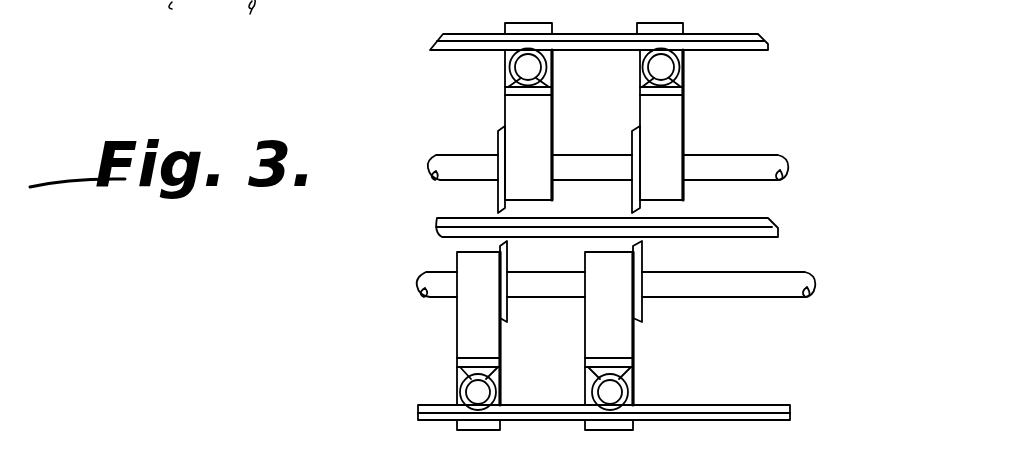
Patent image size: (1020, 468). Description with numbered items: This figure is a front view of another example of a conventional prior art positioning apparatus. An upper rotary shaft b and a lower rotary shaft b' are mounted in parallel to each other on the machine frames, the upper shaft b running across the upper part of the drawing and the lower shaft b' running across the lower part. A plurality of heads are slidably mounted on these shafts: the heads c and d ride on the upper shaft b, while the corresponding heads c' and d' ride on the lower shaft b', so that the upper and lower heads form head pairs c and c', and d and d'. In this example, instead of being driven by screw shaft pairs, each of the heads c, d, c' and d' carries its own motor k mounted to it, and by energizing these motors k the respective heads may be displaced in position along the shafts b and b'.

The upper rotary shaft b is at (611, 153).
The lower rotary shaft b' is at (616, 304).
The head c is at (540, 17).
The head d is at (674, 17).
The head c' is at (499, 436).
The head d' is at (630, 436).
The motor k is at (510, 70).